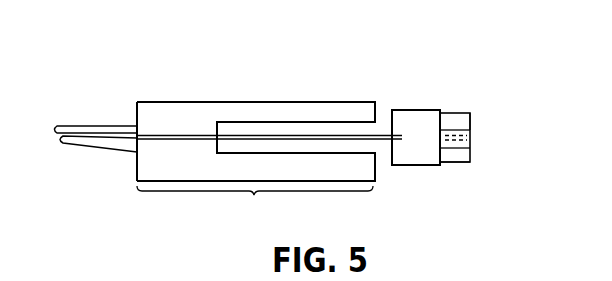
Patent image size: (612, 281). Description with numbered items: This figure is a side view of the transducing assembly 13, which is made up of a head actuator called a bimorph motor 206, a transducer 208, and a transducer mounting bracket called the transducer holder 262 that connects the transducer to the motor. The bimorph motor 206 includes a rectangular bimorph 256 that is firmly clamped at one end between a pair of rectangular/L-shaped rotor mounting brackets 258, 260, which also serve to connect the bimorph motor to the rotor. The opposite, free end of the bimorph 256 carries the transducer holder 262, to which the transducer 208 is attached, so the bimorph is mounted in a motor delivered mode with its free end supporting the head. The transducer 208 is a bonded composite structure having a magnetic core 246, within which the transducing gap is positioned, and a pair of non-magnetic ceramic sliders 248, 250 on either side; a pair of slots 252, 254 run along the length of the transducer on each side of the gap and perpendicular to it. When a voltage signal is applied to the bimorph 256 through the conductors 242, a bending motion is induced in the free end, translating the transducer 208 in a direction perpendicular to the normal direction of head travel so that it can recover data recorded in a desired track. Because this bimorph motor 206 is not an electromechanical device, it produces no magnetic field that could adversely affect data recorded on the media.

The transducing assembly 13 is at (268, 142).
The bimorph motor 206 is at (256, 164).
The rotor mounting bracket 258 is at (190, 128).
The rotor mounting bracket 260 is at (190, 152).
The conductors 242 is at (97, 105).
The bimorph 256 is at (150, 140).
The transducer holder 262 is at (436, 133).
The slider 248 is at (462, 113).
The transducer 208 is at (478, 112).
The slot 252 is at (470, 132).
The magnetic core 246 is at (474, 136).
The slot 254 is at (472, 142).
The slider 250 is at (450, 165).